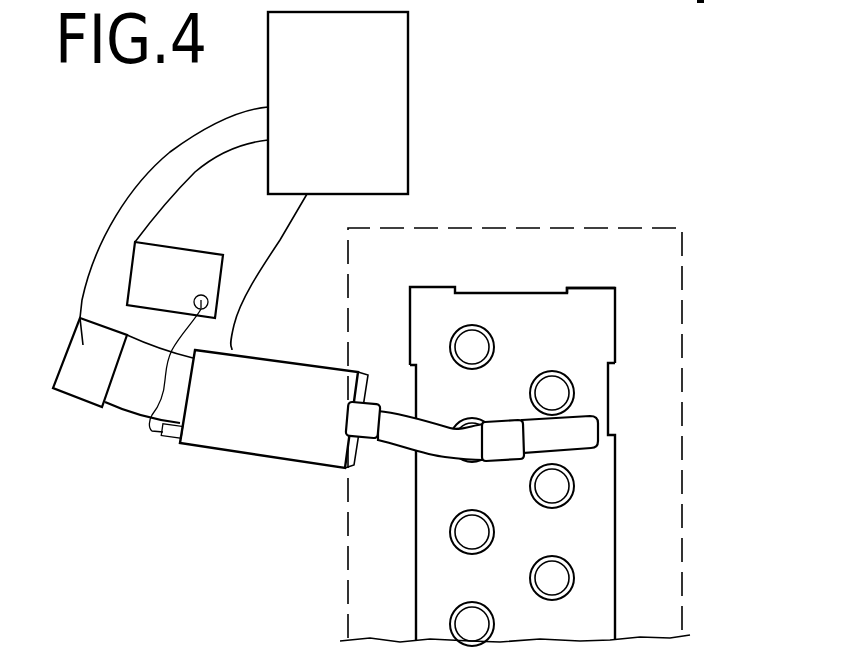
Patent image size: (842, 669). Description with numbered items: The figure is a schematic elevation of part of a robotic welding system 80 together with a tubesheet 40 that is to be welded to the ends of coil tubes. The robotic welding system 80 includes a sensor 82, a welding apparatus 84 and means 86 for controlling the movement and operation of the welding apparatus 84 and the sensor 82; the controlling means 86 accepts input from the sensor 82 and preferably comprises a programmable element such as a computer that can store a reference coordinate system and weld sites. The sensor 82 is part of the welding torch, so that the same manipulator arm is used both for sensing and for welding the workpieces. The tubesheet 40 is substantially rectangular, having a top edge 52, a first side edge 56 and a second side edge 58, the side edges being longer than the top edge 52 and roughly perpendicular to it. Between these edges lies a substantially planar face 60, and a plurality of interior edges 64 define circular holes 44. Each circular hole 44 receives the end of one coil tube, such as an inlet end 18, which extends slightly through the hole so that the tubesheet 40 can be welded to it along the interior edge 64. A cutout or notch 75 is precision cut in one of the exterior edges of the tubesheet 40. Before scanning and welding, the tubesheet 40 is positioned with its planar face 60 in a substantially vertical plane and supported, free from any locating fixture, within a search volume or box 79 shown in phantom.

The means for controlling 86 is at (312, 118).
The robotic welding system 80 is at (286, 359).
The search volume or box 79 is at (663, 228).
The top edge 52 is at (425, 288).
The cutout or notch 75 is at (543, 293).
The circular hole 44 is at (467, 345).
The inlet end 18 is at (485, 335).
The interior edge 64 is at (493, 347).
The sensor 82 is at (535, 433).
The welding apparatus 84 is at (608, 430).
The second side edge 58 is at (616, 500).
The first side edge 56 is at (412, 500).
The tubesheet 40 is at (590, 557).
The planar face 60 is at (475, 592).